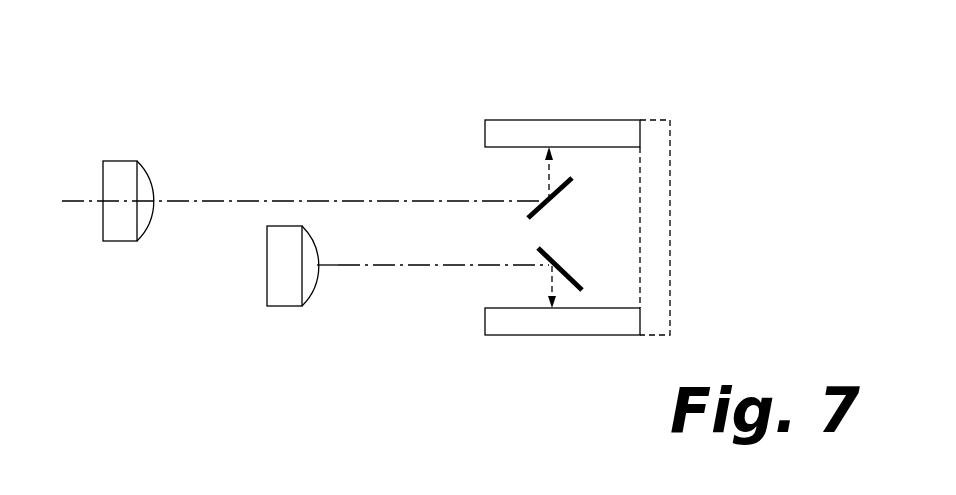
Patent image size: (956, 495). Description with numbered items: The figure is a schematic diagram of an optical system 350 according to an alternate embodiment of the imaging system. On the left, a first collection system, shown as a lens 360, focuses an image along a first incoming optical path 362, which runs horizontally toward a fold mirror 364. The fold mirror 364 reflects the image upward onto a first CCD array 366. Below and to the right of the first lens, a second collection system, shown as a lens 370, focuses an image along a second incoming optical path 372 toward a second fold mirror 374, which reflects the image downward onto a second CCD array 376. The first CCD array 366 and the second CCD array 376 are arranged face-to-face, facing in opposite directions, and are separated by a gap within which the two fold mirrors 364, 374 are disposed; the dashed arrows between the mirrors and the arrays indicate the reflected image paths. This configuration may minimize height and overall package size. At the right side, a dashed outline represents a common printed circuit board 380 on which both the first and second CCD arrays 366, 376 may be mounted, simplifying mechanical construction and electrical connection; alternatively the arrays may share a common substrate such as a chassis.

The optical system 350 is at (326, 56).
The lens 360 is at (118, 241).
The first incoming optical path 362 is at (157, 203).
The fold mirror 364 is at (567, 188).
The first CCD array 366 is at (595, 120).
The lens 370 is at (283, 306).
The second incoming optical path 372 is at (345, 266).
The fold mirror 374 is at (570, 273).
The second CCD array 376 is at (578, 335).
The common printed circuit board 380 is at (672, 298).